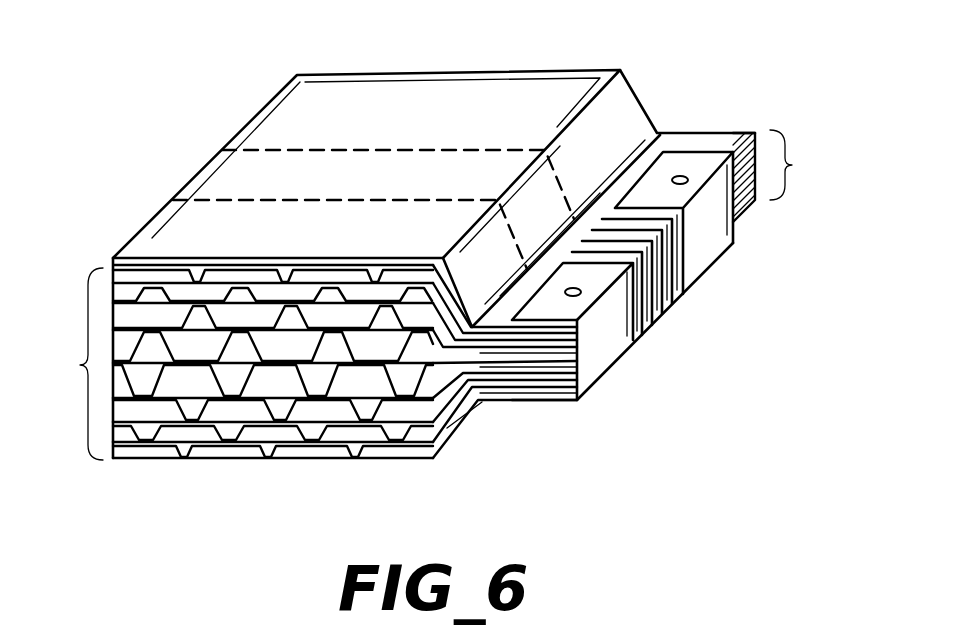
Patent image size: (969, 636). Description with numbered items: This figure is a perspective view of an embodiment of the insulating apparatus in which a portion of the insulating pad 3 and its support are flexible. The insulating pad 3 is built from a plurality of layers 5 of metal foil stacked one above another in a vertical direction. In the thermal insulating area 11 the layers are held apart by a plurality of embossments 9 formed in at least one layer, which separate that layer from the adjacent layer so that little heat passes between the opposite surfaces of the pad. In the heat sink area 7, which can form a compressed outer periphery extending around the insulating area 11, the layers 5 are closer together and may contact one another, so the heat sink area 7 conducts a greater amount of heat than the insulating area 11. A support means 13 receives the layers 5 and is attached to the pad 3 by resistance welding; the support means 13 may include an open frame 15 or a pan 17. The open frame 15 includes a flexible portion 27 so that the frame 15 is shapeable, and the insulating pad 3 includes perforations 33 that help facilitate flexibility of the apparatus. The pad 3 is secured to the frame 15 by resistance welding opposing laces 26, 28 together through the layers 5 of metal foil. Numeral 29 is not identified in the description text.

The insulating pad 3 is at (461, 71).
The layers of metal foil 5 is at (244, 364).
The heat sink area 7 is at (773, 176).
The embossments 9 is at (203, 410).
The thermal insulating area 11 is at (320, 113).
The support means 13 is at (734, 244).
The open frame 15 is at (697, 268).
The pan 17 is at (445, 440).
The lace 26 is at (575, 365).
The flexible portion 27 is at (660, 305).
The lace 28 is at (540, 390).
The mounting hole 29 is at (680, 176).
The perforations 33 is at (223, 200).